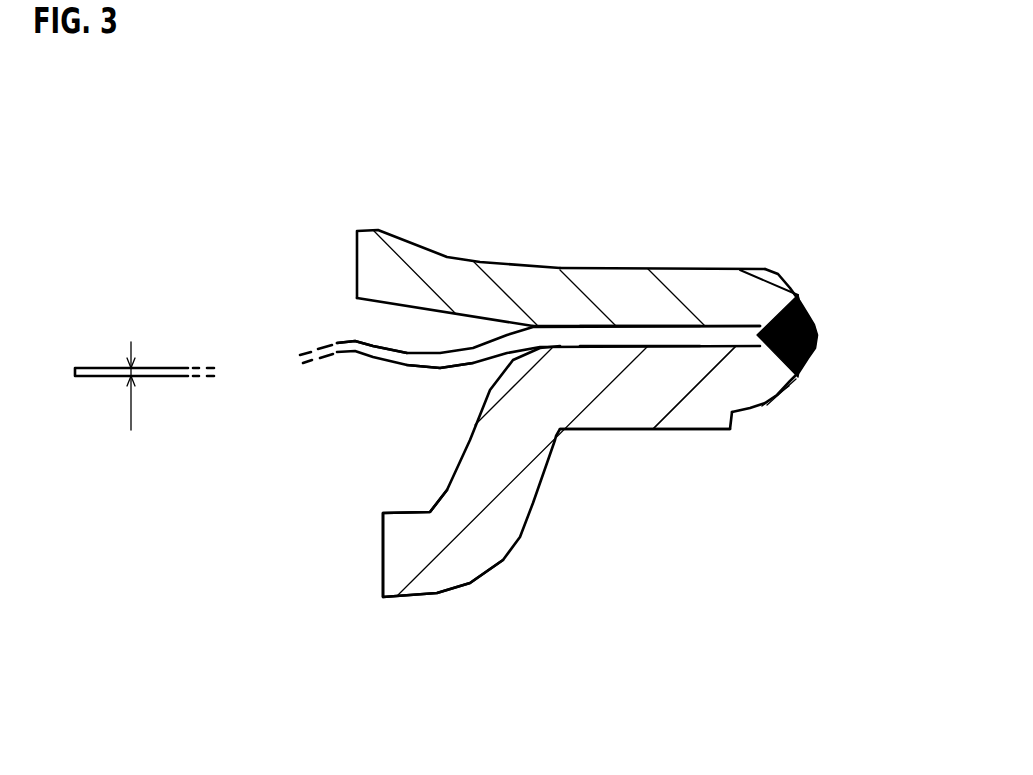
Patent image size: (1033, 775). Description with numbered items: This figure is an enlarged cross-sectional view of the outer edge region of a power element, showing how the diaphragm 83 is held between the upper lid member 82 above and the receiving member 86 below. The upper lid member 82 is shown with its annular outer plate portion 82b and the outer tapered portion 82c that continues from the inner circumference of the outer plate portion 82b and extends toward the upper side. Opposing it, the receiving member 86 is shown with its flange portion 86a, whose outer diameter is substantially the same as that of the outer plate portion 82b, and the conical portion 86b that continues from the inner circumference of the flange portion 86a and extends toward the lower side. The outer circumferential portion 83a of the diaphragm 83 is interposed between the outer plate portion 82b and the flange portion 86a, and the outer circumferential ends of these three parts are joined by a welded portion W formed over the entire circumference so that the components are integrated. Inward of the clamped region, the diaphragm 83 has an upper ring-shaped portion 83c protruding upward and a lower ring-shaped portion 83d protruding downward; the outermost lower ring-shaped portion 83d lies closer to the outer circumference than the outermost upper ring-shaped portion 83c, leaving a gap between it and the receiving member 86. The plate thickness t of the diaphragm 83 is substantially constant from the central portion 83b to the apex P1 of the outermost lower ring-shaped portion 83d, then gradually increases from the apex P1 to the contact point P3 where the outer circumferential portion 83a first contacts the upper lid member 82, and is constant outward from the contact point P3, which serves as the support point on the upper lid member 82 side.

The upper lid member 82 is at (790, 280).
The outer plate portion 82b is at (625, 280).
The outer tapered portion 82c is at (412, 250).
The diaphragm 83 is at (710, 318).
The outer circumferential portion 83a is at (625, 338).
The central portion 83b is at (97, 367).
The upper ring-shaped portion 83c is at (353, 340).
The lower ring-shaped portion 83d is at (437, 370).
The receiving member 86 is at (788, 405).
The flange portion 86a is at (670, 400).
The conical portion 86b is at (513, 532).
The welded portion W is at (817, 345).
The apex of the lower ring-shaped portion P1 is at (443, 370).
The contact point P3 is at (532, 320).
The plate thickness t is at (117, 386).